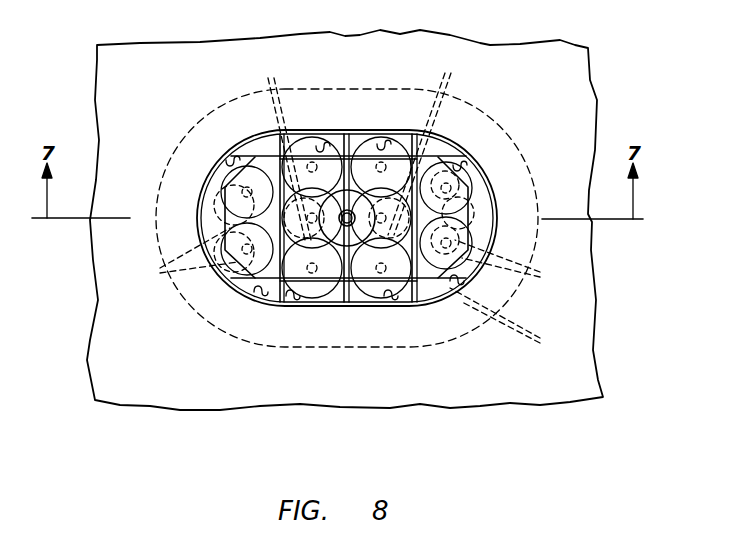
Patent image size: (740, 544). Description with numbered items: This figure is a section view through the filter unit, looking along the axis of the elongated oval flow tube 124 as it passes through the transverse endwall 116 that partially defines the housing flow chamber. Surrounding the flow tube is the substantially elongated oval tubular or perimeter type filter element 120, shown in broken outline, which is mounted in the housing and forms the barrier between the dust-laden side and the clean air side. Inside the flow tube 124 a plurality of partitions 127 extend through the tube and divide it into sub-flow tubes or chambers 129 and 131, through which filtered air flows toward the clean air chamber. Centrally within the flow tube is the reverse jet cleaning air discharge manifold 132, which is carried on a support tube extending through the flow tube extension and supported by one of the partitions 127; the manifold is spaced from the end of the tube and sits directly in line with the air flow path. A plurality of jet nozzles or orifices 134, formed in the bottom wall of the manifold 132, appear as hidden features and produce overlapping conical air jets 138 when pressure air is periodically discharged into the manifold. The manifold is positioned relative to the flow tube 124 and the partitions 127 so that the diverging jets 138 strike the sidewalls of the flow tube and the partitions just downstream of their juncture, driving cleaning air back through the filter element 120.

The transverse endwall 116 is at (598, 88).
The filter element 120 is at (484, 95).
The flow tube 124 is at (474, 158).
The partitions 127 is at (383, 132).
The sub-flow tube 129 is at (347, 190).
The sub-flow tube 131 is at (480, 160).
The reverse jet cleaning air discharge manifold 132 is at (472, 195).
The jet nozzles 134 is at (354, 207).
The conical air jets 138 is at (324, 140).